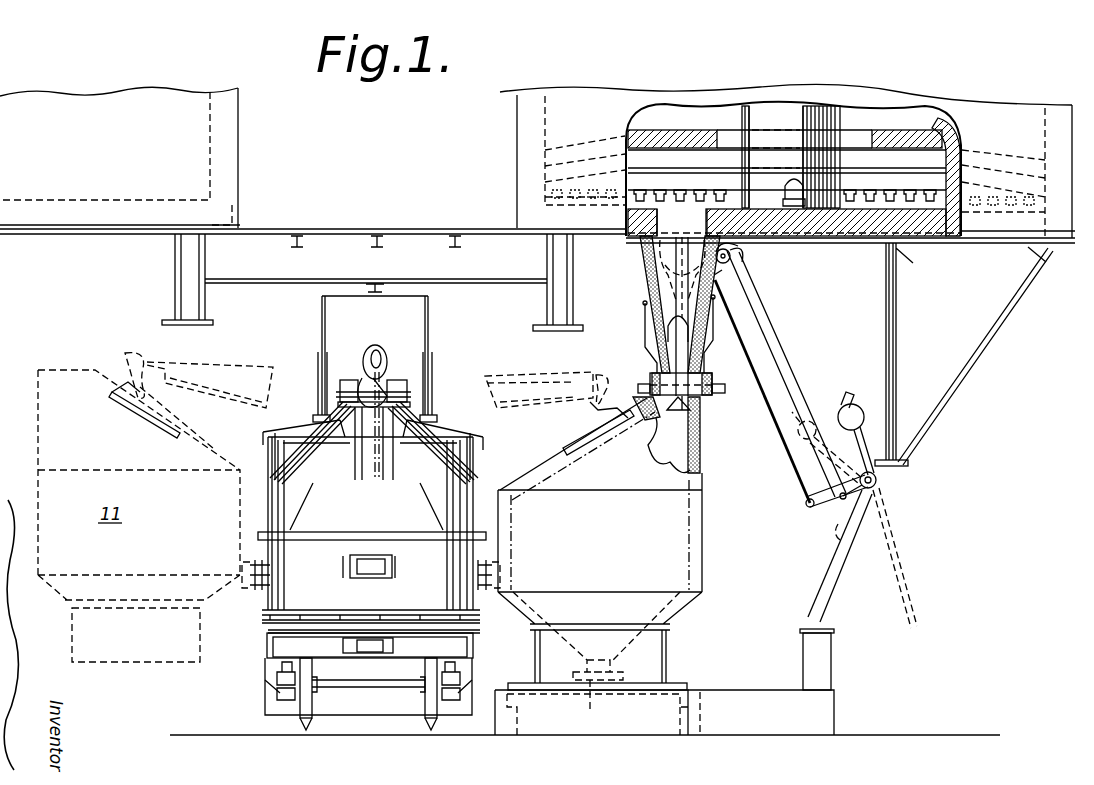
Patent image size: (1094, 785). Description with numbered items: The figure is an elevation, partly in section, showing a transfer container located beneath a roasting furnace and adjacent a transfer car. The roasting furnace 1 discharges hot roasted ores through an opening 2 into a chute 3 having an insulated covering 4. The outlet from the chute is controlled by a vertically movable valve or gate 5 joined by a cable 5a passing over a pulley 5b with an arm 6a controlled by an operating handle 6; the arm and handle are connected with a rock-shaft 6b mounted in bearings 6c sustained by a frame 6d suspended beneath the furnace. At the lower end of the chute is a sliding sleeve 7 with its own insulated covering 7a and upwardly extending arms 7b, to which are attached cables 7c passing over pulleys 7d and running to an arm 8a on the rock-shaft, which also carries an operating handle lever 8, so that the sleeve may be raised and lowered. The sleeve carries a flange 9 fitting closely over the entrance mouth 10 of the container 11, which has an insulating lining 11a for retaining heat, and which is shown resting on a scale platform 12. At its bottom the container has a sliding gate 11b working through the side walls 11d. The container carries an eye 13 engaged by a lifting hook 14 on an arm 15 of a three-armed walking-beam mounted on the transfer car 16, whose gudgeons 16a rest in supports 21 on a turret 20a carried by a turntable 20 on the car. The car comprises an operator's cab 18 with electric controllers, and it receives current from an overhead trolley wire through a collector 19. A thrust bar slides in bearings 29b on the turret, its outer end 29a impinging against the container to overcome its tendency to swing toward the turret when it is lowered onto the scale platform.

The roasting furnace 1 is at (527, 118).
The opening 2 is at (674, 216).
The chute 3 is at (718, 277).
The insulated covering 4 is at (728, 318).
The vertically movable valve or gate 5 is at (672, 413).
The cable 5a is at (735, 323).
The pulley 5b is at (680, 276).
The operating handle 6 is at (836, 598).
The arm 6a is at (810, 508).
The rock-shaft 6b is at (878, 484).
The bearings 6c is at (887, 470).
The frame 6d is at (966, 384).
The sliding sleeve 7 is at (710, 383).
The insulated covering 7a is at (718, 389).
The upwardly extending arms 7b is at (648, 326).
The cables 7c is at (792, 374).
The pulleys 7d is at (660, 277).
The operating handle lever 8 is at (822, 580).
The arm 8a is at (852, 500).
The flange 9 is at (652, 396).
The entrance mouth 10 is at (660, 412).
The container 11 is at (672, 526).
The insulating lining 11a is at (690, 457).
The sliding gate 11b is at (610, 727).
The side walls 11d is at (668, 640).
The scale platform 12 is at (680, 685).
The eye 13 is at (590, 418).
The lifting hook 14 is at (596, 380).
The arm 15 is at (504, 373).
The transfer car 16 is at (270, 598).
The gudgeons 16a is at (407, 390).
The operator's cab 18 is at (295, 427).
The collector 19 is at (430, 318).
The turntable 20 is at (472, 620).
The turret 20a is at (284, 575).
The supports 21 is at (372, 511).
The outer end 29a is at (372, 572).
The bearings 29b is at (392, 575).